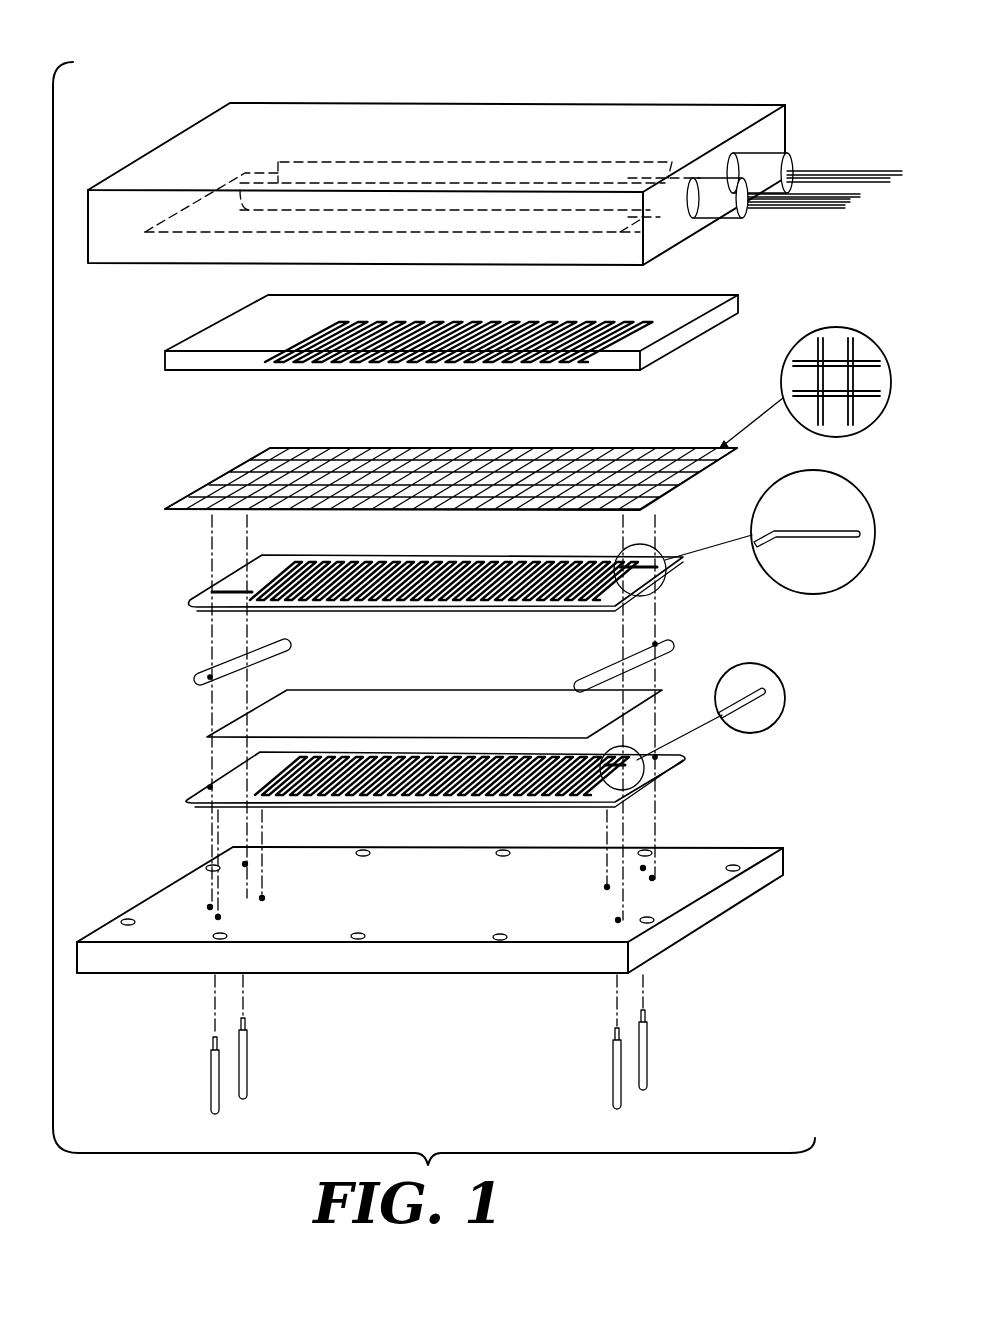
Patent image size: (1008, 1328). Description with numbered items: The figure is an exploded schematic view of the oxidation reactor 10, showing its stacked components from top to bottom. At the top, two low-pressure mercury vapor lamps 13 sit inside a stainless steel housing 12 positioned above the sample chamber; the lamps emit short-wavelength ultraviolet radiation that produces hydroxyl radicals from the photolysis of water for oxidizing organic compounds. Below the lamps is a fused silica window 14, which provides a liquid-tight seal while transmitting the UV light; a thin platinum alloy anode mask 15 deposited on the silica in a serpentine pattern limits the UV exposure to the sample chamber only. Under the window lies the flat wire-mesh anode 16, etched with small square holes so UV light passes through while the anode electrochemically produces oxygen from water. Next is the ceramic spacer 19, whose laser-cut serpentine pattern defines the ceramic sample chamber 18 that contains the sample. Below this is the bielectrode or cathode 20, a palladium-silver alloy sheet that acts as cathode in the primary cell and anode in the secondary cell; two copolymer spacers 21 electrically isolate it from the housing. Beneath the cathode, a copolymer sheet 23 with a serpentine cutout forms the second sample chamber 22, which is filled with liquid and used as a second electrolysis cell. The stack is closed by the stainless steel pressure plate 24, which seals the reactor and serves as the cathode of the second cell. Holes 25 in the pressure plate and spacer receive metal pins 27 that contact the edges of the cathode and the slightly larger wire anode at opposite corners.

The oxidation reactor 10 is at (206, 61).
The U.V. lamps and housing 12 is at (167, 140).
The low-pressure mercury vapor lamps 13 is at (703, 180).
The fused silica window 14 is at (212, 323).
The serpentine heating element pattern 15 is at (650, 338).
The wire-mesh anode 16 is at (222, 477).
The ceramic sample chamber 18 is at (238, 573).
The ceramic spacer 19 is at (197, 595).
The cathode 20 is at (640, 692).
The spacers 21 is at (205, 675).
The second sample chamber 22 is at (253, 783).
The sheet of TEFZEL copolymer material 23 is at (197, 792).
The stainless steel pressure plate 24 is at (405, 972).
The holes 25 is at (245, 863).
The metal pins 27 is at (212, 1057).